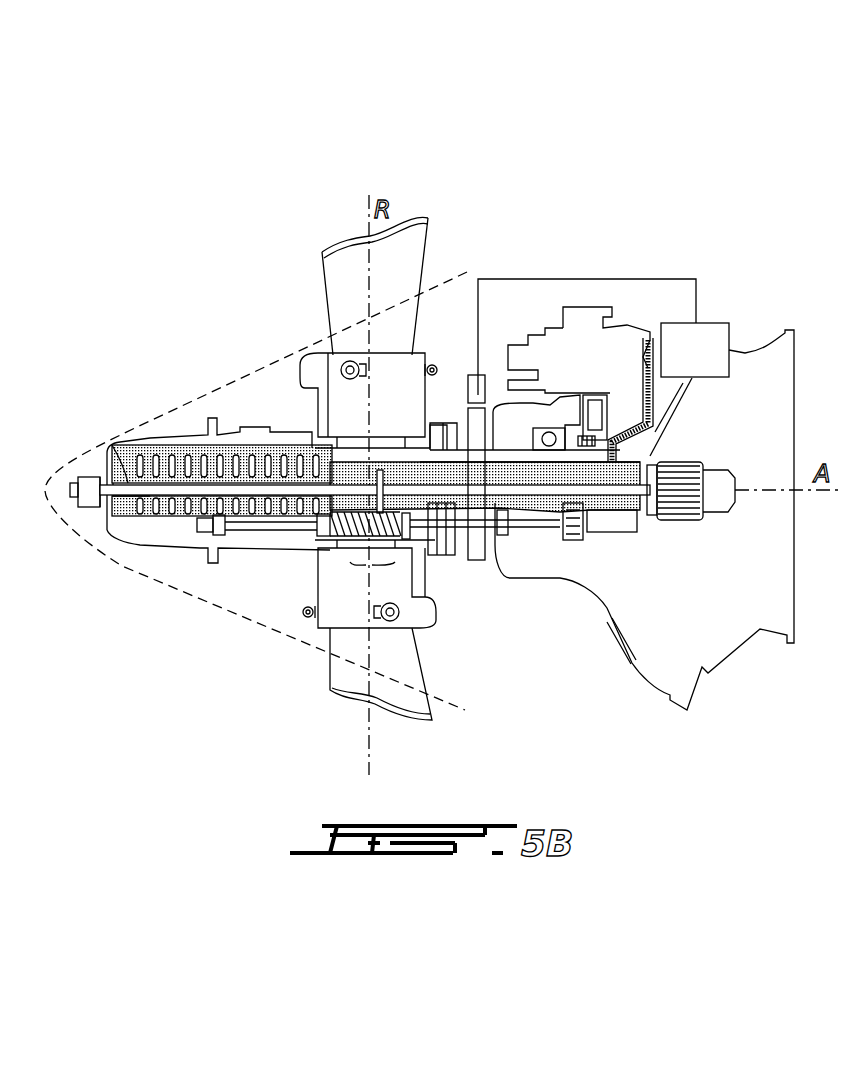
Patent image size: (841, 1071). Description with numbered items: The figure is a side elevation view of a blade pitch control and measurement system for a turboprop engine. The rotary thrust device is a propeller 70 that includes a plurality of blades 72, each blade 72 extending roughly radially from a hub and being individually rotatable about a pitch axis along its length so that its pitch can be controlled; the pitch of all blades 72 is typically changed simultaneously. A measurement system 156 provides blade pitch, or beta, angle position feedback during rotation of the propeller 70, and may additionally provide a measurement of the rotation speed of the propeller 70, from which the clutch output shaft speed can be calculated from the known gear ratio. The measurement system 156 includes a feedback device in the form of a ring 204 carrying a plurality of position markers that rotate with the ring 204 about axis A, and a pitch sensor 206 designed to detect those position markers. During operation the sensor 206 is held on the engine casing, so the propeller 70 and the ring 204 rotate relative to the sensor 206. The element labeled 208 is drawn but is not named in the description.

The propeller 70 is at (165, 322).
The blades 72 is at (325, 250).
The measurement system 156 is at (607, 403).
The ring 204 is at (480, 552).
The pitch sensor 206 is at (480, 392).
The control module 208 is at (713, 337).